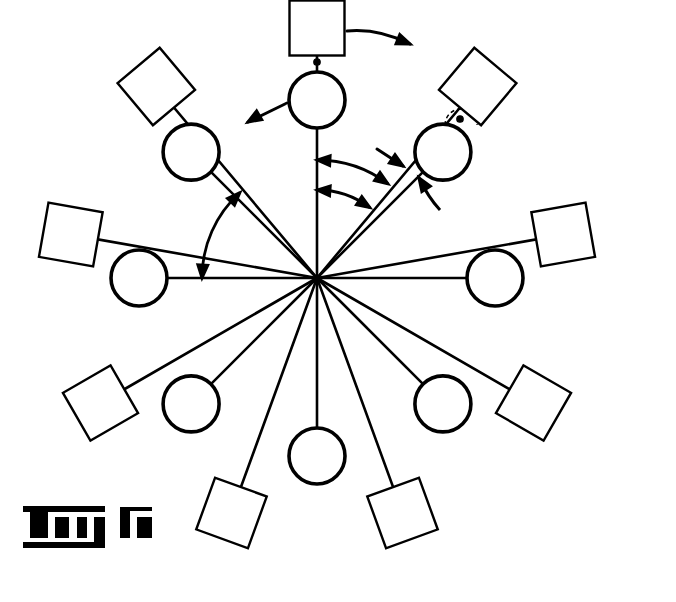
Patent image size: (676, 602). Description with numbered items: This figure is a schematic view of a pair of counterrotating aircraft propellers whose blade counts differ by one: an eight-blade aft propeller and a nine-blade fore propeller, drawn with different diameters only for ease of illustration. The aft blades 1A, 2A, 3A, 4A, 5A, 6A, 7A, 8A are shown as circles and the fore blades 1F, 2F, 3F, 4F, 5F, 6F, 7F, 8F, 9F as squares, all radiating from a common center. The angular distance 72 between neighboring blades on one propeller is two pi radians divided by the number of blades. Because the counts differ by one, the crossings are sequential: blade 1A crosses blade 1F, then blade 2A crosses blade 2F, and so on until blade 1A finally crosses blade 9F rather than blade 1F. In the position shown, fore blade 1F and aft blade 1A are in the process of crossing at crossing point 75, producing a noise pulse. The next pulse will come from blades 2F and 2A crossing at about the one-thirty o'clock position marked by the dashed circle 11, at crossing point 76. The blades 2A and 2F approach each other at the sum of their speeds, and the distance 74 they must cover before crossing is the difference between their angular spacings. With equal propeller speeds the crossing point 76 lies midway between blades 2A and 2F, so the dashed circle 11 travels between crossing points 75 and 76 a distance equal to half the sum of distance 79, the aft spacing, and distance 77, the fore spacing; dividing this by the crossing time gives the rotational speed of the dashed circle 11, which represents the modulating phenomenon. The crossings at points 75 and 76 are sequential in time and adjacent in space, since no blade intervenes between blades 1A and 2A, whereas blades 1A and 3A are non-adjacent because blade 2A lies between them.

The dashed circle 11 is at (443, 115).
The angular distance 72 is at (206, 237).
The distance 74 is at (441, 209).
The crossing point 75 is at (311, 63).
The crossing point 76 is at (465, 124).
The distance 77 is at (355, 160).
The distance 79 is at (350, 204).
The aft blade 1A is at (317, 100).
The aft blade 2A is at (443, 152).
The aft blade 3A is at (495, 278).
The aft blade 4A is at (443, 404).
The aft blade 5A is at (317, 456).
The aft blade 6A is at (191, 404).
The aft blade 7A is at (139, 278).
The aft blade 8A is at (191, 152).
The fore blade 1F is at (317, 28).
The fore blade 2F is at (477, 86).
The fore blade 3F is at (563, 235).
The fore blade 4F is at (533, 402).
The fore blade 5F is at (402, 513).
The fore blade 6F is at (231, 513).
The fore blade 7F is at (100, 402).
The fore blade 8F is at (71, 235).
The fore blade 9F is at (156, 86).